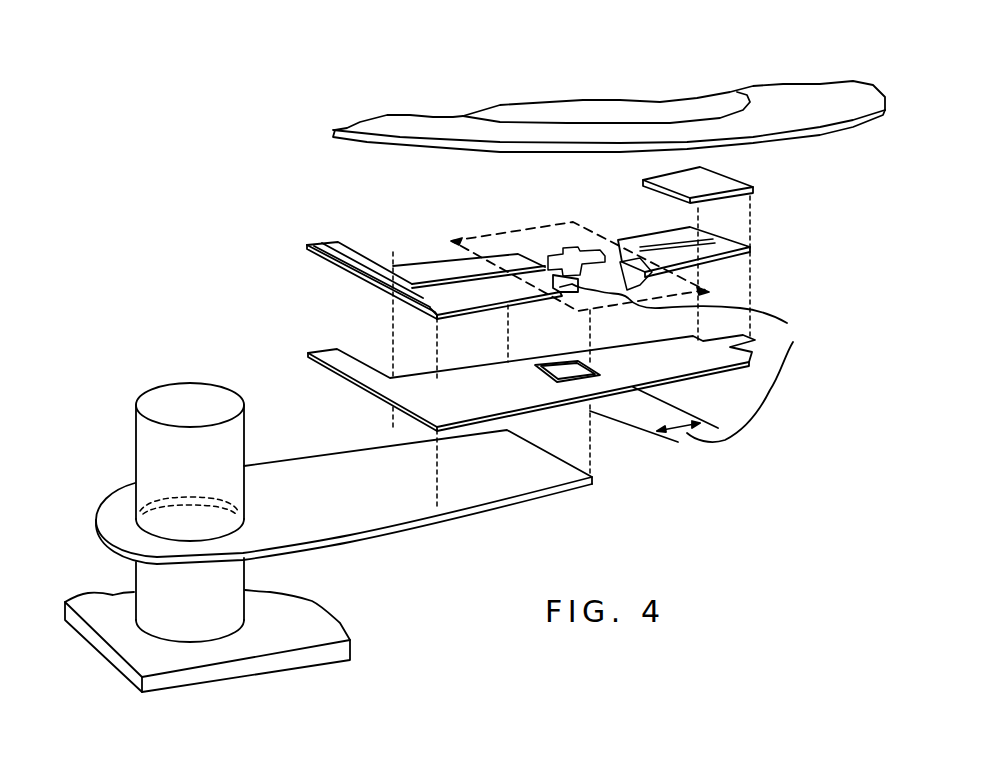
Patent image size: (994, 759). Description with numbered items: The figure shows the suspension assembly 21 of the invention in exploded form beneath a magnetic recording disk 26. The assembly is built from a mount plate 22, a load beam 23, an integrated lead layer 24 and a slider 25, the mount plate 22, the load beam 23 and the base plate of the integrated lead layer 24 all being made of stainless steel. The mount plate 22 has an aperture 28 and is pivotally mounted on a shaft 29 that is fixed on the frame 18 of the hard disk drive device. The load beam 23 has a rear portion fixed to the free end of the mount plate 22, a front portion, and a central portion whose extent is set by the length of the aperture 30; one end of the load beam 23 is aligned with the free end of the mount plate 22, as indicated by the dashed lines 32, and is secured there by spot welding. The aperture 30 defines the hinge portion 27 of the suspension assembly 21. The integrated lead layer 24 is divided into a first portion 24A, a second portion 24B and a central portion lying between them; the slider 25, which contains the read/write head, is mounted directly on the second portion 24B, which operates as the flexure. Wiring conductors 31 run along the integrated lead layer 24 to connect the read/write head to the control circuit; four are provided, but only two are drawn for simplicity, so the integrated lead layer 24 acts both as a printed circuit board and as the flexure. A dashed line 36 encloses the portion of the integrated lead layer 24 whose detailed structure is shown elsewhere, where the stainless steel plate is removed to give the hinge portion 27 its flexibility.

The frame 18 is at (333, 630).
The suspension assembly 21 is at (270, 241).
The mount plate 22 is at (392, 530).
The load beam 23 is at (670, 367).
The integrated lead layer 24 is at (427, 265).
The first portion 24A is at (437, 318).
The second portion 24B is at (740, 240).
The slider 25 is at (757, 187).
The magnetic recording disk 26 is at (340, 127).
The hinge portion 27 is at (727, 357).
The aperture 28 is at (148, 534).
The shaft 29 is at (225, 577).
The aperture 30 is at (558, 365).
The wiring conductors 31 is at (340, 250).
The dashed lines 32 is at (393, 425).
The dashed line 36 is at (517, 226).